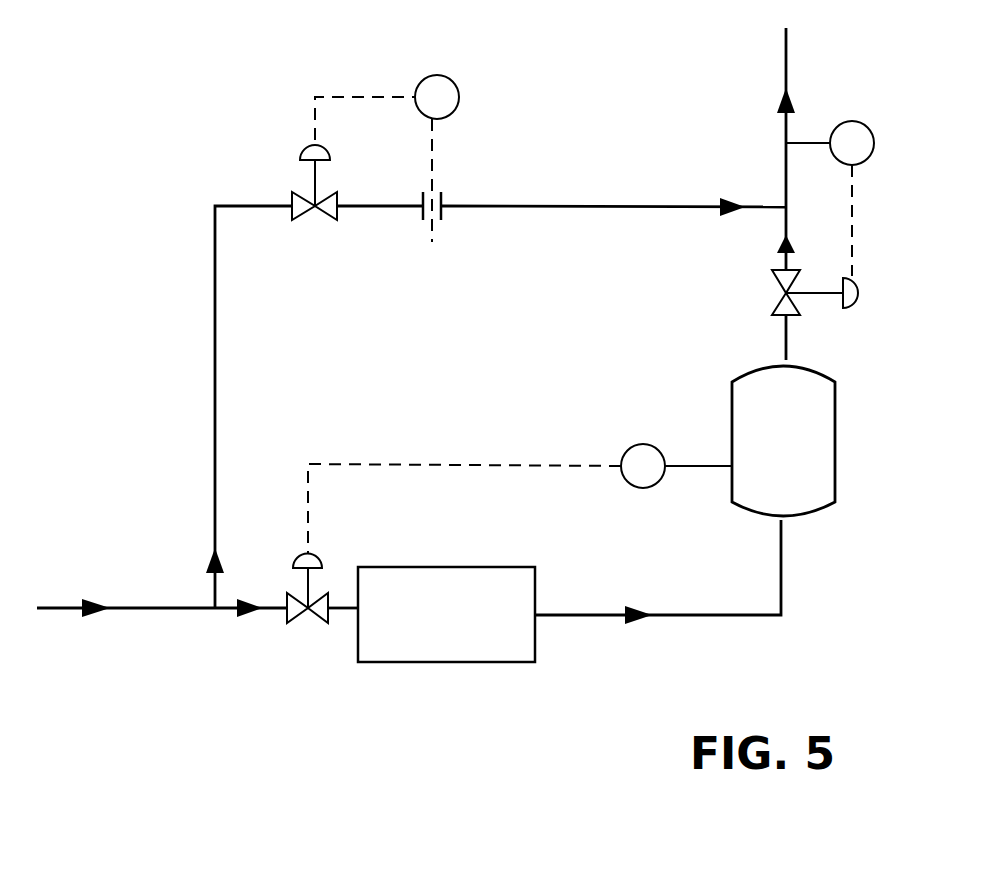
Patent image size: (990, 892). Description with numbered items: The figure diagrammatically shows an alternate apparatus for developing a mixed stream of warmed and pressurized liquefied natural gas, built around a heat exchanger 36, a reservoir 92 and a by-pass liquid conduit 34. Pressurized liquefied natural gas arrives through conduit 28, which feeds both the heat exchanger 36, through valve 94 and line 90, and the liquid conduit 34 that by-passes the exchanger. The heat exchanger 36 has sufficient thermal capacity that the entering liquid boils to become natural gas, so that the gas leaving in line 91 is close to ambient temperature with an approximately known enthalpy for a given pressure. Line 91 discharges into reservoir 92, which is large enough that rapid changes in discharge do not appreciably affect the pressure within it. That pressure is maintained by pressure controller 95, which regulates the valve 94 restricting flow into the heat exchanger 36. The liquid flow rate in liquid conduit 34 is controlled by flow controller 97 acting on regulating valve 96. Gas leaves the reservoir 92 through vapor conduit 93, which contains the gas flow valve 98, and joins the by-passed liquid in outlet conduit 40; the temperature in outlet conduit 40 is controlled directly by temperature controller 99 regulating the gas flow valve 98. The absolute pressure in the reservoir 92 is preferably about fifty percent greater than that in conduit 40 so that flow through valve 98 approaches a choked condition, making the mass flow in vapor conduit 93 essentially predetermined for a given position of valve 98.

The conduit 28 is at (63, 611).
The liquid conduit 34 is at (215, 442).
The heat exchanger 36 is at (470, 567).
The outlet conduit 40 is at (791, 53).
The heat exchanger inlet line 90 is at (345, 613).
The line 91 is at (576, 620).
The reservoir 92 is at (836, 450).
The vapor conduit 93 is at (782, 259).
The valve 94 is at (292, 592).
The pressure controller 95 is at (625, 450).
The regulating valve 96 is at (297, 195).
The flow controller 97 is at (453, 77).
The gas flow valve 98 is at (793, 318).
The temperature controller 99 is at (871, 129).